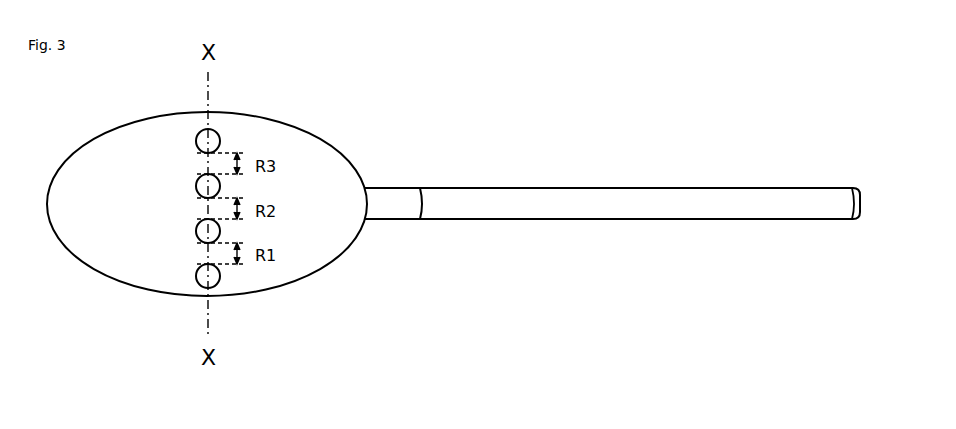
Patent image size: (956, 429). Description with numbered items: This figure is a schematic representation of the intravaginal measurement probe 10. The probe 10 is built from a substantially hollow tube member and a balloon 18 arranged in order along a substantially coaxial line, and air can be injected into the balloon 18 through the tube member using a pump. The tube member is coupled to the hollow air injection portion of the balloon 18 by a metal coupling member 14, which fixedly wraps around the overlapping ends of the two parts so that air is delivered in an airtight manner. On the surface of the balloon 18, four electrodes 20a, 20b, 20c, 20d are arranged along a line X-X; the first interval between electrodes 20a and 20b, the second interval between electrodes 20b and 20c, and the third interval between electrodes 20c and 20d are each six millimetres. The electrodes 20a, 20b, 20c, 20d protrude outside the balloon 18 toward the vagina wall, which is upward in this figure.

The intravaginal measurement probe 10 is at (428, 259).
The coupling member 14 is at (398, 198).
The balloon 18 is at (342, 187).
The electrode 20a is at (197, 278).
The electrode 20b is at (197, 229).
The electrode 20c is at (197, 181).
The electrode 20d is at (197, 138).